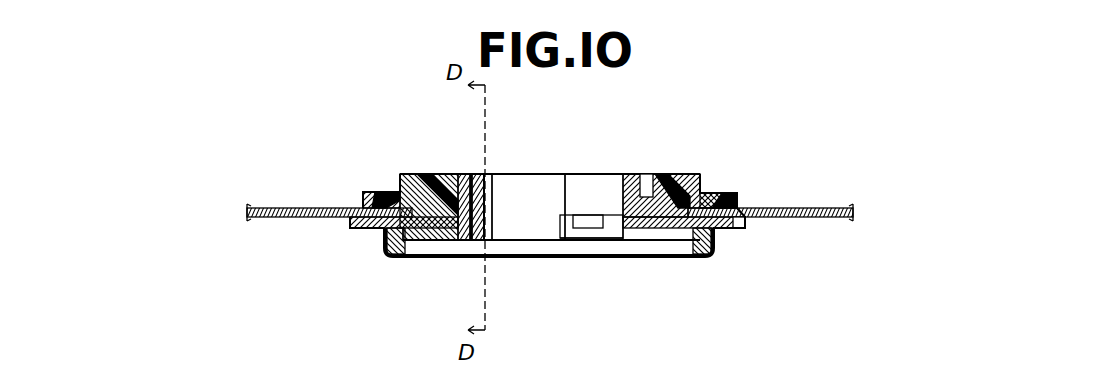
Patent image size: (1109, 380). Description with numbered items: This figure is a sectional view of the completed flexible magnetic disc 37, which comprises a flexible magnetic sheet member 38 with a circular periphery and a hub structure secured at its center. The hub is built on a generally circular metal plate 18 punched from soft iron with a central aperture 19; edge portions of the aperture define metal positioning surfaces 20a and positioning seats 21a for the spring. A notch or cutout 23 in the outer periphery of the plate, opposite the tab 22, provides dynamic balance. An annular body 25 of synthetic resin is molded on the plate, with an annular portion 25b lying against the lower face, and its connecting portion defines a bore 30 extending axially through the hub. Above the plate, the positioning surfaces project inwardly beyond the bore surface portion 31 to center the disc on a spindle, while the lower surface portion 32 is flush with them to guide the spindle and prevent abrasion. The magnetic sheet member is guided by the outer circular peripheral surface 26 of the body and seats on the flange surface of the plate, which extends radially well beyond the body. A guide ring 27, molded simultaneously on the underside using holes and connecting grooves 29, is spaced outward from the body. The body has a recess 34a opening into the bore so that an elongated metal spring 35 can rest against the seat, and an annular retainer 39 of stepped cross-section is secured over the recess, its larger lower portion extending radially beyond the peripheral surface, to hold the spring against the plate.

The flexible magnetic disc 37 is at (791, 104).
The flexible magnetic sheet member 38 is at (302, 207).
The notch or cutout 23 is at (742, 230).
The annular retainer 39 is at (380, 191).
The tab 22 is at (438, 178).
The recess or slit 34a is at (464, 175).
The metal spring 35 is at (505, 242).
The positioning seat 21a is at (483, 242).
The bore 30 is at (543, 184).
The surface portion 31 is at (598, 188).
The metal positioning surface 20a is at (584, 228).
The surface portion 32 is at (612, 236).
The annular body 25 is at (640, 180).
The outer circular peripheral surface 26 is at (705, 176).
The connecting grooves 29 is at (725, 193).
The metal plate 18 is at (368, 232).
The guide ring 27 is at (397, 256).
The central aperture 19 is at (632, 246).
The annular portion 25b is at (420, 258).